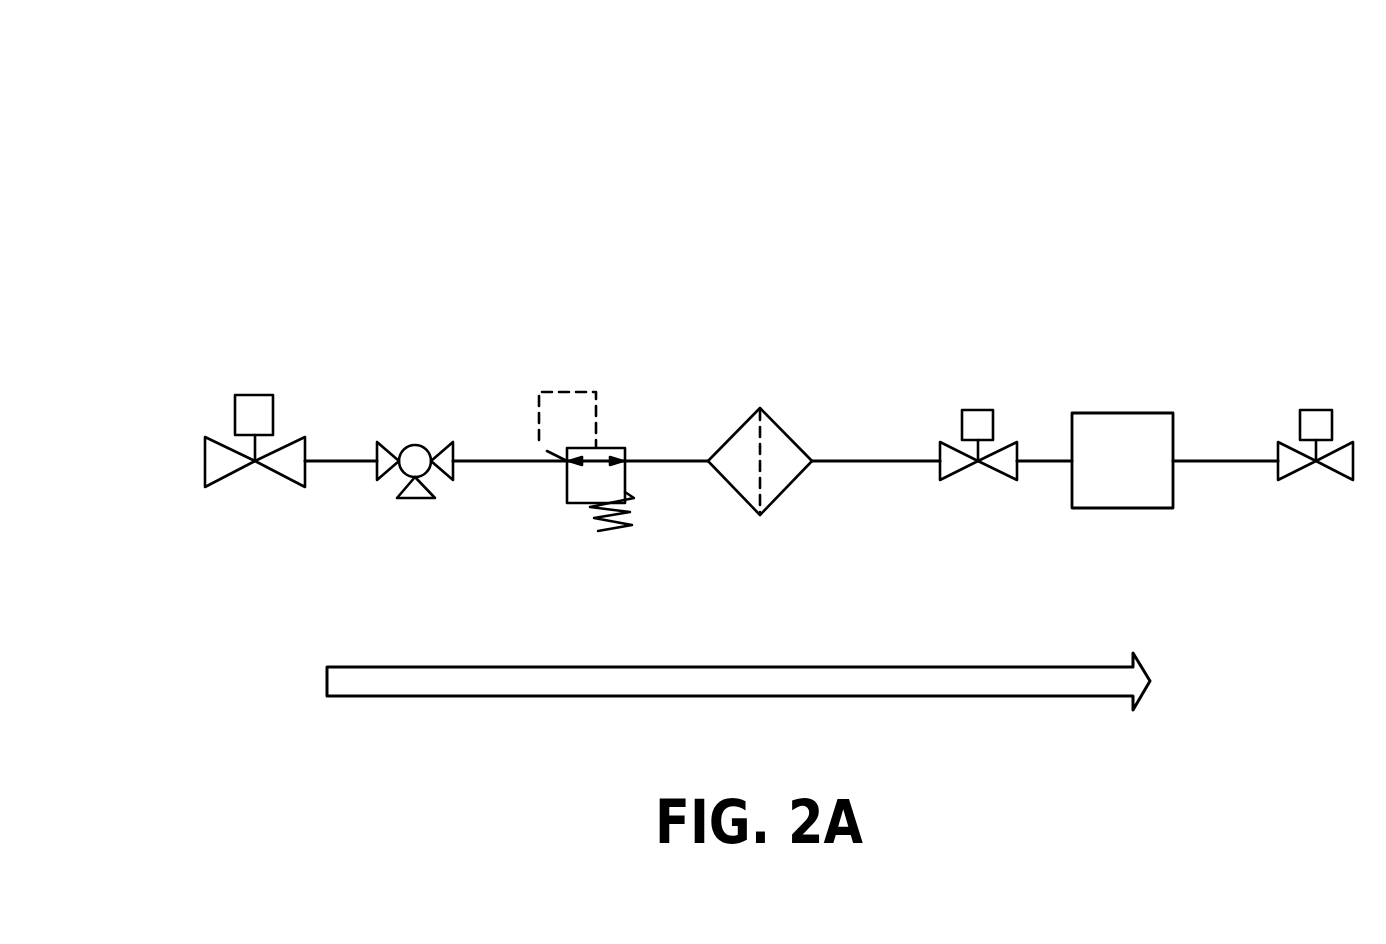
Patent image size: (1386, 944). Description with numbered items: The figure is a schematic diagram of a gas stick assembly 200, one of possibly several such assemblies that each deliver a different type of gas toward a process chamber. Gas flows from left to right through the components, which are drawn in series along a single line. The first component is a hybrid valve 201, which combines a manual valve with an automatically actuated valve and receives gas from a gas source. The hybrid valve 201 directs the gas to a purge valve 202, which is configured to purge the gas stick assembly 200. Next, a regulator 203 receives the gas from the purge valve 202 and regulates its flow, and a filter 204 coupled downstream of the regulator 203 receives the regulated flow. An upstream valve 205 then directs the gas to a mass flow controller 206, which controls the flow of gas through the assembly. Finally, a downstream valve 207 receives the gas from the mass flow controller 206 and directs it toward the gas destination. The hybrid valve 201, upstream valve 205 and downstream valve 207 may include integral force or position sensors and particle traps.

The gas stick assembly 200 is at (190, 120).
The hybrid valve 201 is at (255, 465).
The purge valve 202 is at (415, 500).
The regulator 203 is at (567, 504).
The filter 204 is at (752, 415).
The upstream valve 205 is at (999, 473).
The mass flow controller 206 is at (1135, 508).
The downstream valve 207 is at (1337, 467).